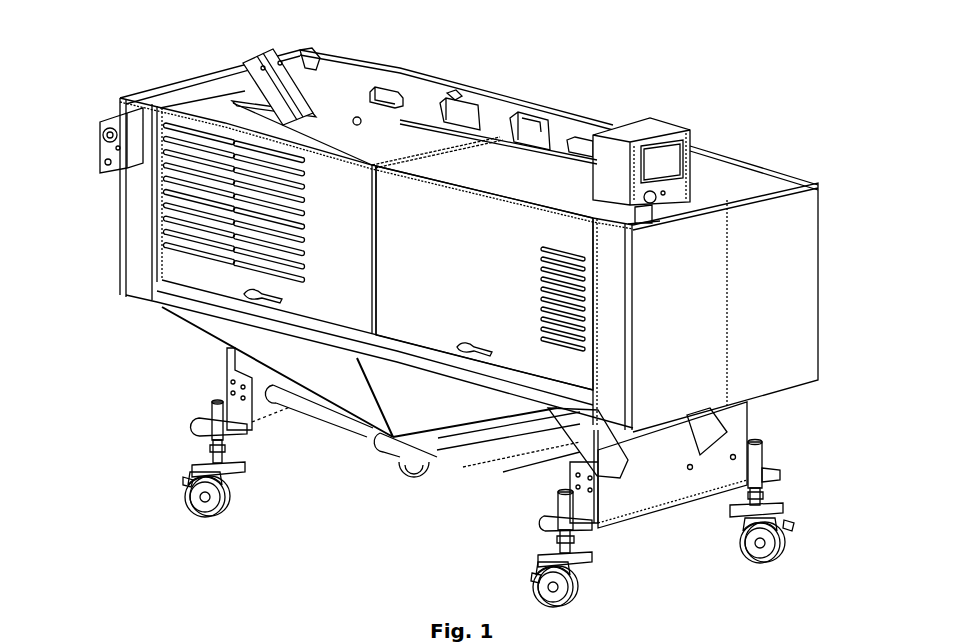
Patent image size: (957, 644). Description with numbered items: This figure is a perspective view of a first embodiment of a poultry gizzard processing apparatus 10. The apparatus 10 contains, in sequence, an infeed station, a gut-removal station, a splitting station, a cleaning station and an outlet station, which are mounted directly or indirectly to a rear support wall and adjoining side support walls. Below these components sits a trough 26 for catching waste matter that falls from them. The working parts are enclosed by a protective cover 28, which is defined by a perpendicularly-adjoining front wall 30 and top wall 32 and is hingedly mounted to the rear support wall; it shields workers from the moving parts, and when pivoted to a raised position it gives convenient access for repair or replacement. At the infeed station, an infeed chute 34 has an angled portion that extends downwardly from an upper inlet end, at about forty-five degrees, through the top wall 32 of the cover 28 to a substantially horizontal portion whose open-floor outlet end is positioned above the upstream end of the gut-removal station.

The apparatus 10 is at (686, 51).
The trough 26 is at (337, 387).
The protective cover 28 is at (458, 282).
The front wall 30 is at (408, 330).
The top wall 32 is at (487, 160).
The infeed chute 34 is at (257, 67).